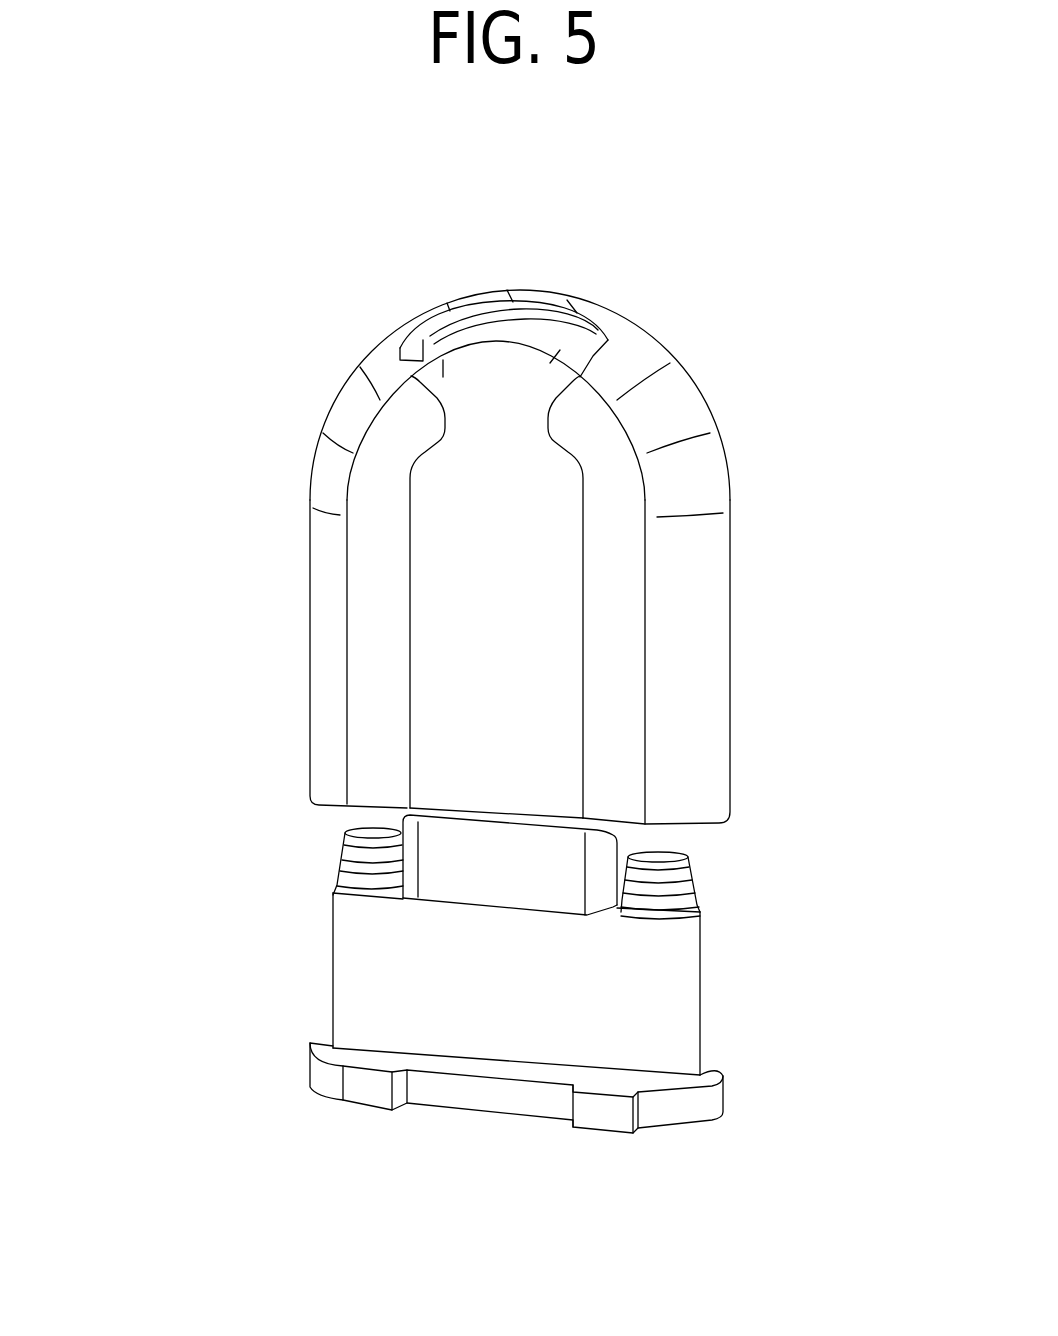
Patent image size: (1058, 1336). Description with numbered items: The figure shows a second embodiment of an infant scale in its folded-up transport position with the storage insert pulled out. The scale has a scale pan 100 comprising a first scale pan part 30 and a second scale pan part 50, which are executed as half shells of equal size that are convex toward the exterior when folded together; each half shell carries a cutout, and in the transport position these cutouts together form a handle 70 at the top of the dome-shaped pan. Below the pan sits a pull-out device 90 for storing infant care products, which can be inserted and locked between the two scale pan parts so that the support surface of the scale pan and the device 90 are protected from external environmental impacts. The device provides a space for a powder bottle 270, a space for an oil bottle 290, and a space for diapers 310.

The scale pan 100 is at (238, 562).
The second scale pan part 50 is at (733, 383).
The handle 70 is at (526, 269).
The first scale pan part 30 is at (682, 667).
The pull-out device 90 is at (254, 968).
The oil bottle 290 is at (365, 865).
The powder bottle 270 is at (668, 880).
The diapers 310 is at (517, 868).